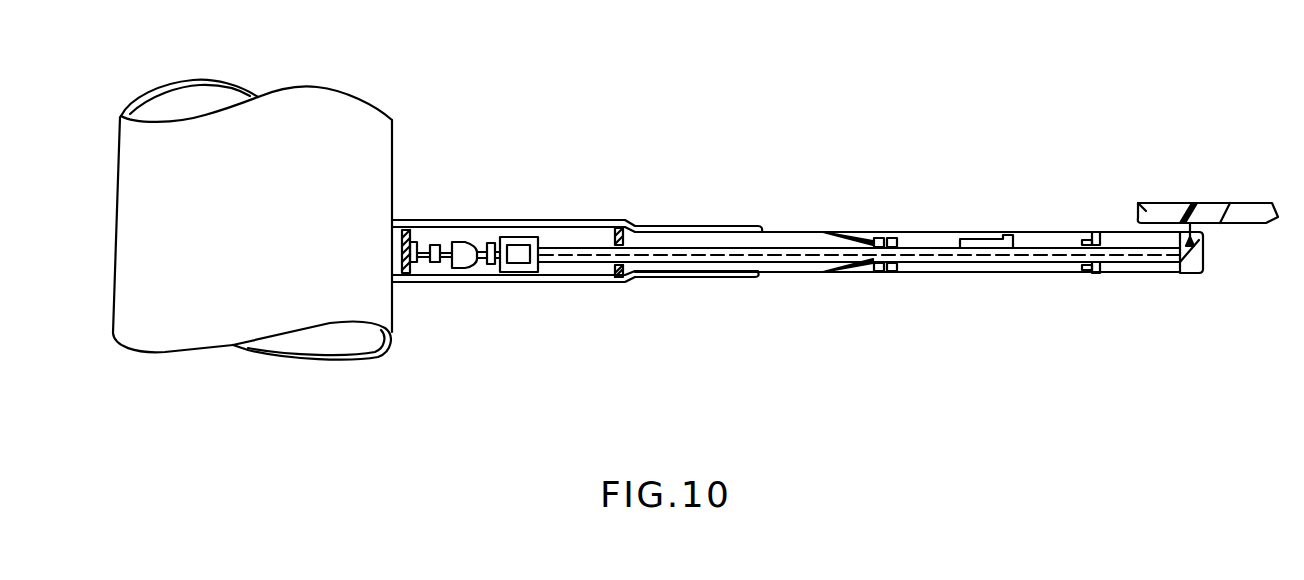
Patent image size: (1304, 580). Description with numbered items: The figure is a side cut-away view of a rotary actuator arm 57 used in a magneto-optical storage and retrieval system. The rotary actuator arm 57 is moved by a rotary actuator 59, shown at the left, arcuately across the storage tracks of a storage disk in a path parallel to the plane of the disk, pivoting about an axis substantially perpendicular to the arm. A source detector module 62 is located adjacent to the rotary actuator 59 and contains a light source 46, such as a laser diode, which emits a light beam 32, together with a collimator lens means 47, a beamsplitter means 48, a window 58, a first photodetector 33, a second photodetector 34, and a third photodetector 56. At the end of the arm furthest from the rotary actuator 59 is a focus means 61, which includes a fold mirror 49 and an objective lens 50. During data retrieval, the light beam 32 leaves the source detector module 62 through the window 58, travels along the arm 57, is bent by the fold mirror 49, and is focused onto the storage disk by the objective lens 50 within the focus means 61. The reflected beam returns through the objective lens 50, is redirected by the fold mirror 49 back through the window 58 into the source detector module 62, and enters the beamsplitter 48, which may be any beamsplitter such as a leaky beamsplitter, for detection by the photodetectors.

The light beam 32 is at (668, 250).
The first photodetector 33 is at (530, 272).
The second photodetector 34 is at (483, 270).
The light source 46 is at (435, 245).
The collimator lens means 47 is at (458, 270).
The beamsplitter means 48 is at (514, 237).
The fold mirror 49 is at (1195, 274).
The objective lens 50 is at (1178, 257).
The third photodetector 56 is at (413, 240).
The rotary actuator arm 57 is at (755, 278).
The window 58 is at (615, 243).
The rotary actuator 59 is at (259, 356).
The focus means 61 is at (1203, 257).
The source detector module 62 is at (620, 278).